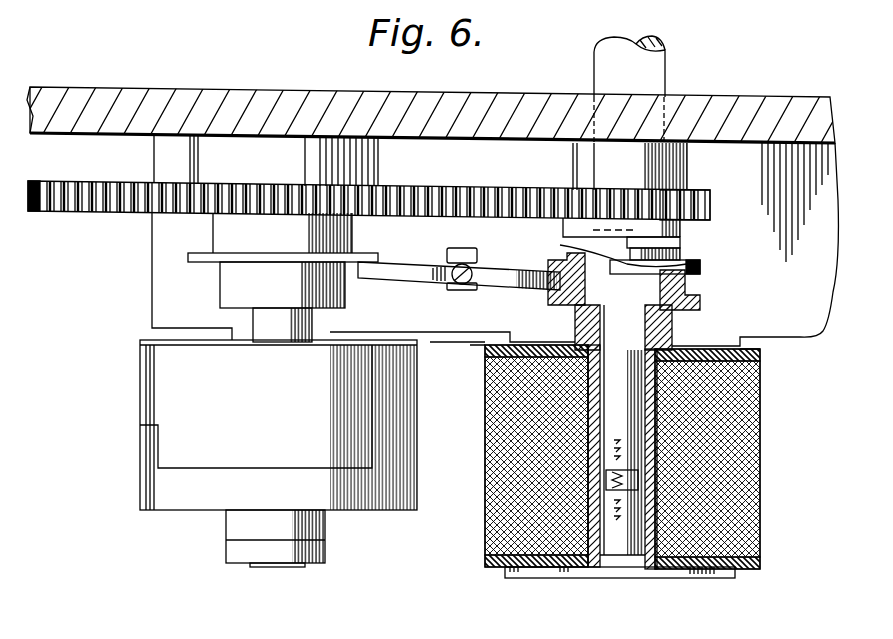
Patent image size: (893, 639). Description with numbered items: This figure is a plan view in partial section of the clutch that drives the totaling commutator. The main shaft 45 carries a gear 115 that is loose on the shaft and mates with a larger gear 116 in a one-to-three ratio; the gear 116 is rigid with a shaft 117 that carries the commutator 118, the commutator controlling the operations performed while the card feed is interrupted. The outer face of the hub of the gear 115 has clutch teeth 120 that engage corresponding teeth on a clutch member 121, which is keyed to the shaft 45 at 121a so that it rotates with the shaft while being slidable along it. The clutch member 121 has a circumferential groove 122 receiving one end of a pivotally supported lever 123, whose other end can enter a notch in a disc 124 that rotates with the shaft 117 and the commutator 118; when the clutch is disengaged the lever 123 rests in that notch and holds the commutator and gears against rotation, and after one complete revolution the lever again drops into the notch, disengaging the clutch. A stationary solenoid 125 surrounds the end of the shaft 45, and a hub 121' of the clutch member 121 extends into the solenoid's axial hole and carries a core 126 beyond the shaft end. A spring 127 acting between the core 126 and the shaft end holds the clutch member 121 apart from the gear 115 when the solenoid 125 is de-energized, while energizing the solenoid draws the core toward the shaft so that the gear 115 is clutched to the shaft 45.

The main shaft 45 is at (648, 72).
The gear 115 is at (706, 208).
The gear 116 is at (416, 197).
The shaft 117 is at (298, 332).
The commutator 118 is at (183, 410).
The clutch teeth 120 is at (600, 250).
The clutch member 121 is at (660, 255).
The key 121a is at (580, 297).
The hub 121' is at (620, 589).
The circumferential groove 122 is at (690, 283).
The lever 123 is at (407, 270).
The disc 124 is at (197, 254).
The solenoid 125 is at (740, 508).
The core 126 is at (618, 553).
The spring 127 is at (612, 490).